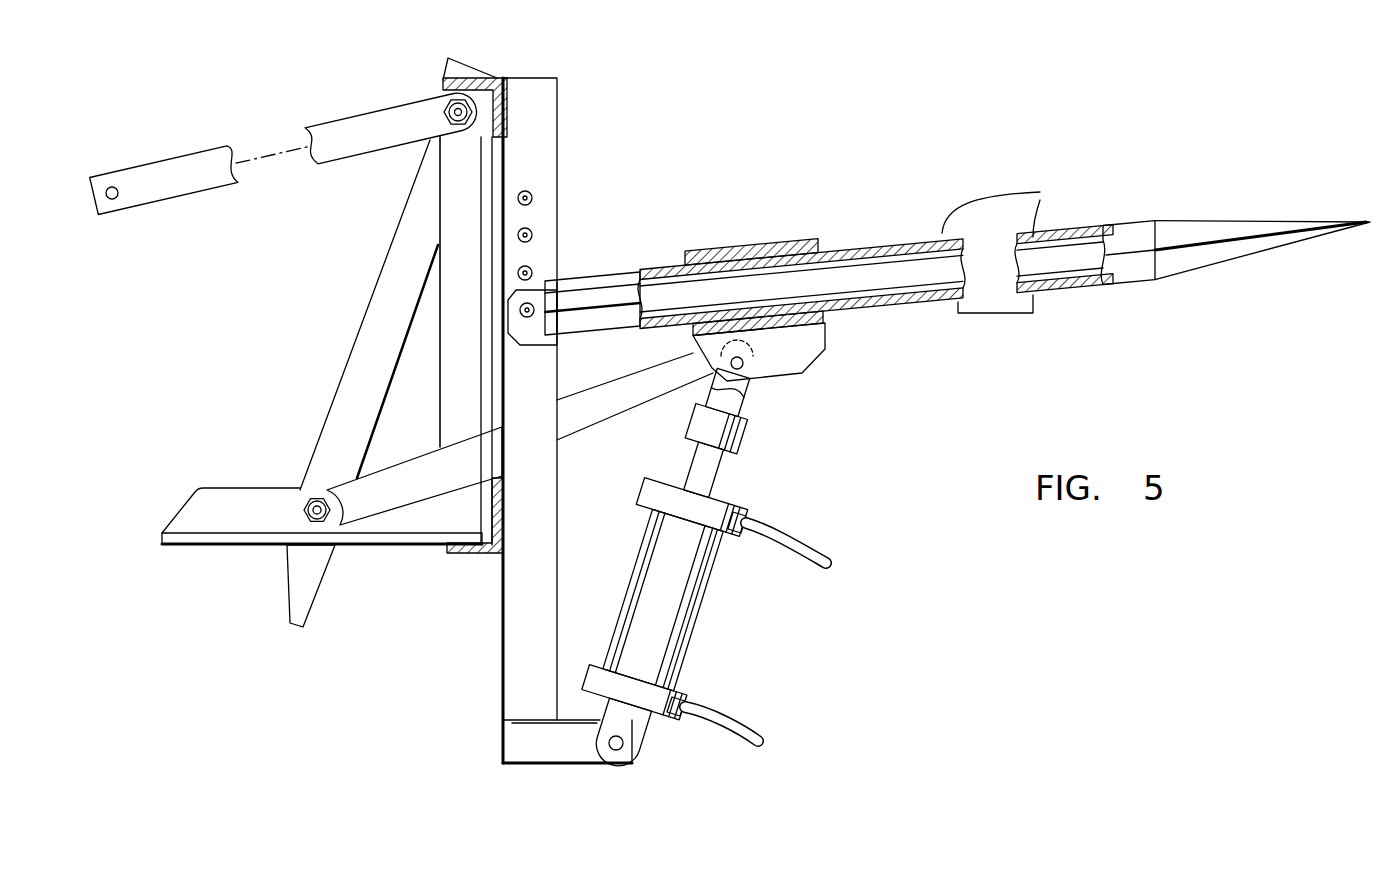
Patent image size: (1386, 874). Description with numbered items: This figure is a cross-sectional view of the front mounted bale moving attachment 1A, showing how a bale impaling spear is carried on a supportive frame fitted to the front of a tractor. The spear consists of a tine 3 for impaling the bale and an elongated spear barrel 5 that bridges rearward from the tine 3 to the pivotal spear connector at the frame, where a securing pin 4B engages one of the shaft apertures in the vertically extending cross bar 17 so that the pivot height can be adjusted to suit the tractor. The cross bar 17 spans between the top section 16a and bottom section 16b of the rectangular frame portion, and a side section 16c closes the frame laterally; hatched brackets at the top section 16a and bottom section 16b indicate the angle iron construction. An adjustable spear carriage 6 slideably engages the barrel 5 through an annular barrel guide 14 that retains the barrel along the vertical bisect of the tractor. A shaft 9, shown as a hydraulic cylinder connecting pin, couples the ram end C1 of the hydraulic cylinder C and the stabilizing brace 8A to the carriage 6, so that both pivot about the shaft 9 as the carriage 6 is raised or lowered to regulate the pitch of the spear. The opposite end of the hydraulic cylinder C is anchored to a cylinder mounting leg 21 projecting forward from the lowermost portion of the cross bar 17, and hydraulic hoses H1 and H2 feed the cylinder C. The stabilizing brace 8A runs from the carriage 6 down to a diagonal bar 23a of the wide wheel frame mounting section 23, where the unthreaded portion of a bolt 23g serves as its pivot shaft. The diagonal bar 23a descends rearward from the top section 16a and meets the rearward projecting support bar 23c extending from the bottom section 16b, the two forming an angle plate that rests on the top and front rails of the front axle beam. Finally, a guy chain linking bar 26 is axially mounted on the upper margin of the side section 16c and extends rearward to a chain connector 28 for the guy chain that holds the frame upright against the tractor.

The front mounted bale moving attachment 1A is at (600, 208).
The tine 3 is at (1218, 225).
The securing pin 4B is at (530, 303).
The spear barrel 5 is at (875, 254).
The adjustable spear carriage 6 is at (822, 335).
The stabilizing brace 8A is at (594, 428).
The shaft 9 is at (745, 362).
The barrel guide 14 is at (794, 240).
The top section 16a is at (467, 78).
The bottom section 16b is at (470, 556).
The side section 16c is at (452, 202).
The cross bar 17 is at (553, 133).
The cylinder mounting leg 21 is at (576, 758).
The wide wheel frame mounting section 23 is at (388, 550).
The diagonal bar 23a is at (362, 328).
The rearward projecting support bar 23c is at (190, 548).
The bolt 23g is at (312, 495).
The guy chain linking bar 26 is at (313, 126).
The chain connector 28 is at (110, 187).
The hydraulic cylinder C is at (687, 627).
The ram end C1 is at (717, 477).
The hydraulic hose H1 is at (772, 527).
The hydraulic hose H2 is at (733, 718).